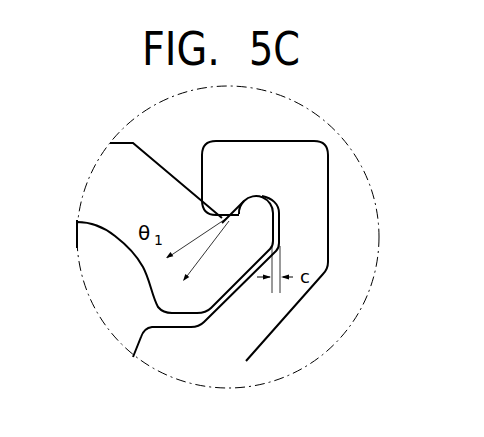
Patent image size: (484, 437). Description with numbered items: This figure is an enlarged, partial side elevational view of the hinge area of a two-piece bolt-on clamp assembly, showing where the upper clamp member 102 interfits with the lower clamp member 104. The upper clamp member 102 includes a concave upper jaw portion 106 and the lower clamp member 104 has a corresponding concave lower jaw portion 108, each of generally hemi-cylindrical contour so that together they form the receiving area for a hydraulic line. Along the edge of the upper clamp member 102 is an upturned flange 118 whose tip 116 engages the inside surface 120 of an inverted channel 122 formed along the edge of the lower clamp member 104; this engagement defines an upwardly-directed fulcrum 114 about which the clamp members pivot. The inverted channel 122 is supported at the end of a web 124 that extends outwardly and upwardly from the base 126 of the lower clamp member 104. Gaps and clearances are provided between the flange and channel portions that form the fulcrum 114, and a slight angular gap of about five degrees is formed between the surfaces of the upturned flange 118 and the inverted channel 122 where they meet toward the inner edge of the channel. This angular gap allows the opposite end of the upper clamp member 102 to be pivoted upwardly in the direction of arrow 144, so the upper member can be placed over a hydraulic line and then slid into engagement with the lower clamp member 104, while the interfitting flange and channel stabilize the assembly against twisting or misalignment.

The upper clamp member 102 is at (97, 238).
The lower clamp member 104 is at (248, 363).
The body surface 106 is at (132, 250).
The concave lower jaw portion 108 is at (139, 352).
The fulcrum 114 is at (281, 183).
The tip 116 is at (256, 196).
The upturned flange 118 is at (223, 272).
The inside surface 120 is at (283, 220).
The inverted channel 122 is at (270, 150).
The web 124 is at (312, 246).
The base 126 is at (243, 316).
The arrow 144 is at (170, 108).